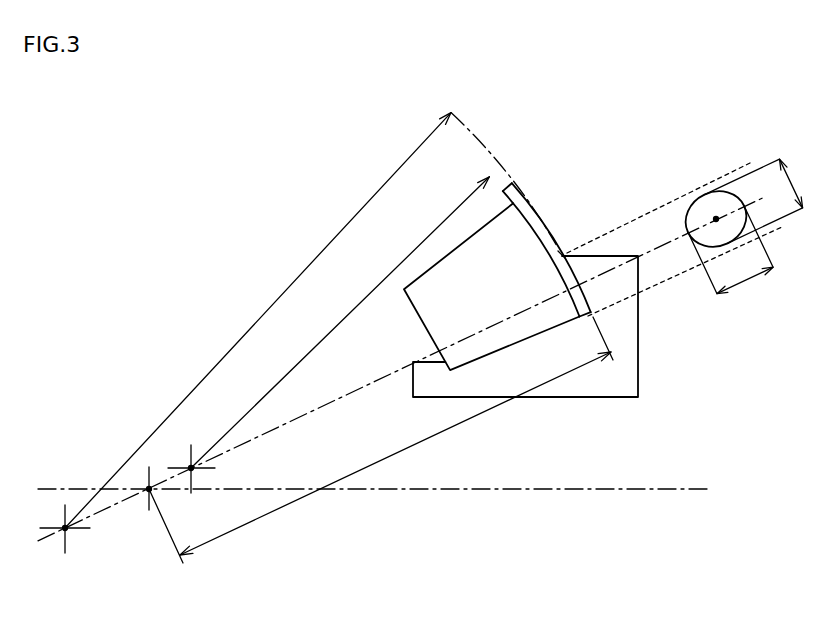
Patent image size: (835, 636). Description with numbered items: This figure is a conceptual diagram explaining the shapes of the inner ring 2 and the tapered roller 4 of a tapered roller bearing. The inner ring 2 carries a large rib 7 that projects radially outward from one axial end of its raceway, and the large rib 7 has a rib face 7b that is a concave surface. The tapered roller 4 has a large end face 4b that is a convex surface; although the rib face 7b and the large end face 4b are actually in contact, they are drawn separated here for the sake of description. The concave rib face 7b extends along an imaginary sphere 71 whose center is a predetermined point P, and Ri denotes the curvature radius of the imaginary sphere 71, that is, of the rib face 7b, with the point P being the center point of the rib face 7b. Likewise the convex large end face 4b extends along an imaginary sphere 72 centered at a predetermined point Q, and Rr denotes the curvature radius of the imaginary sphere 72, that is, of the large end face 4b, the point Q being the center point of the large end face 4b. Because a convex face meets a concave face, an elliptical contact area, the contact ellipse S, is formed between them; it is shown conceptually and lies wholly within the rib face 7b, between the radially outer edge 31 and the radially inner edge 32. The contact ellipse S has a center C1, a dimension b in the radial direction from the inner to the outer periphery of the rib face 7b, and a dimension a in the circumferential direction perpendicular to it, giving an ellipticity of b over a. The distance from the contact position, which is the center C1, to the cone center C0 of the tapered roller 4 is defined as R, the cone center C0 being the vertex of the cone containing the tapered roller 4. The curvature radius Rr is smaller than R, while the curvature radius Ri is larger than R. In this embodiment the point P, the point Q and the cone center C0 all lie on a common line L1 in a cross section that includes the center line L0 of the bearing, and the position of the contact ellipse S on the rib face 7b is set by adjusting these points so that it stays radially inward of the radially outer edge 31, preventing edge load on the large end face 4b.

The inner ring 2 is at (593, 397).
The tapered roller 4 is at (533, 341).
The large end face 4b is at (543, 219).
The large rib 7 is at (597, 265).
The rib face 7b is at (558, 272).
The radially outer edge 31 is at (562, 255).
The radially inner edge 32 is at (593, 317).
The imaginary sphere 71 is at (477, 137).
The imaginary sphere 72 is at (515, 182).
The contact ellipse S is at (687, 218).
The center of the contact ellipse C1 is at (716, 219).
The dimension a is at (730, 255).
The dimension b is at (759, 201).
The common line L1 is at (295, 421).
The center line L0 is at (475, 490).
The point P is at (65, 528).
The cone center C0 is at (149, 489).
The point Q is at (191, 468).
The curvature radius Ri is at (258, 320).
The curvature radius Rr is at (340, 322).
The distance R is at (396, 436).